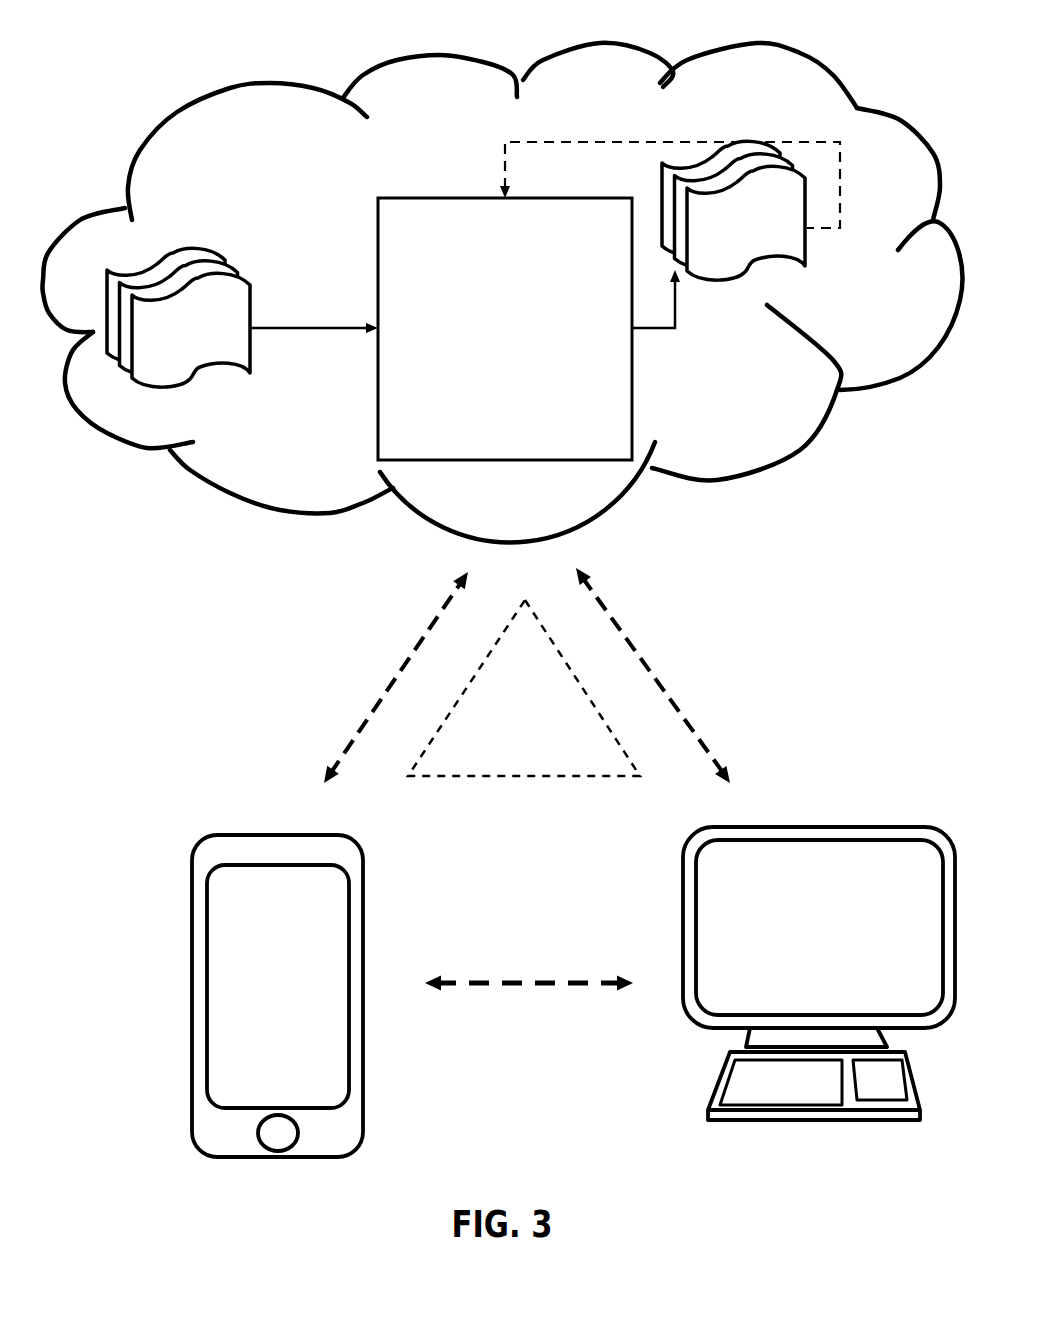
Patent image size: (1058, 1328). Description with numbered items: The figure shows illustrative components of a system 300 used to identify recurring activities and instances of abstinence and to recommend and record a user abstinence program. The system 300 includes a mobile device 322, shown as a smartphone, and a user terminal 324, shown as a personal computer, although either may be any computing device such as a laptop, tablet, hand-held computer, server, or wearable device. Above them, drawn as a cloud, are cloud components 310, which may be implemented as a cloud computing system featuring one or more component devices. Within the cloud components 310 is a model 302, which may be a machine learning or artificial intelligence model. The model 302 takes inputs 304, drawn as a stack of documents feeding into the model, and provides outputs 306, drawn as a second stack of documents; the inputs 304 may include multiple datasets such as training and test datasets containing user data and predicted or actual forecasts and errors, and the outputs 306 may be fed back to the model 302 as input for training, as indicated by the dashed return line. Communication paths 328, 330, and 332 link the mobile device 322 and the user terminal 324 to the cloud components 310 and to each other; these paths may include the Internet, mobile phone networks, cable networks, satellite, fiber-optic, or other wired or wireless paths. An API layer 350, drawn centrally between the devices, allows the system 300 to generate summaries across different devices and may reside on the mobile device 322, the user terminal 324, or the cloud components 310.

The system 300 is at (519, 35).
The model 302 is at (524, 339).
The inputs 304 is at (199, 253).
The outputs 306 is at (783, 258).
The cloud components 310 is at (802, 104).
The mobile device 322 is at (266, 809).
The user terminal 324 is at (812, 818).
The communication path 328 is at (351, 664).
The communication path 330 is at (733, 631).
The communication path 332 is at (518, 953).
The API layer 350 is at (544, 714).